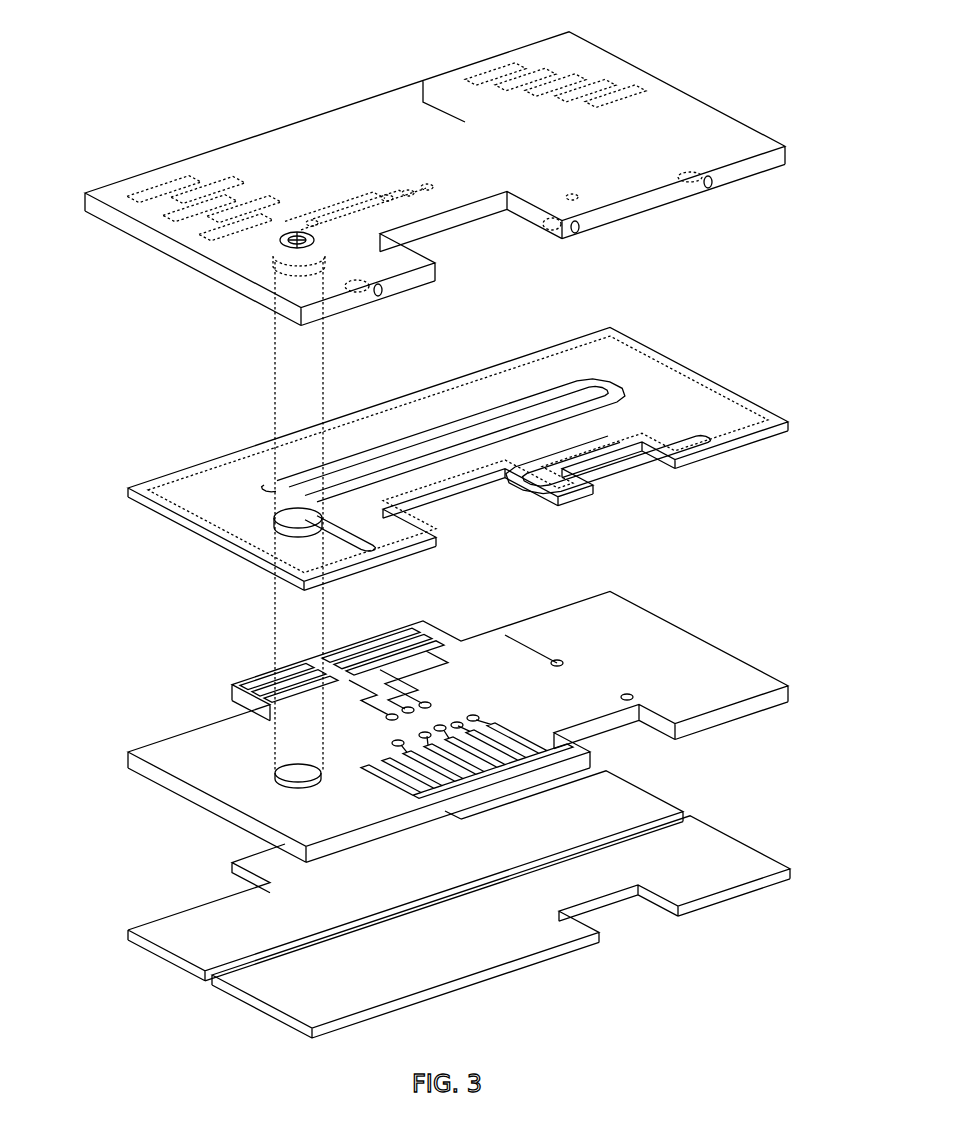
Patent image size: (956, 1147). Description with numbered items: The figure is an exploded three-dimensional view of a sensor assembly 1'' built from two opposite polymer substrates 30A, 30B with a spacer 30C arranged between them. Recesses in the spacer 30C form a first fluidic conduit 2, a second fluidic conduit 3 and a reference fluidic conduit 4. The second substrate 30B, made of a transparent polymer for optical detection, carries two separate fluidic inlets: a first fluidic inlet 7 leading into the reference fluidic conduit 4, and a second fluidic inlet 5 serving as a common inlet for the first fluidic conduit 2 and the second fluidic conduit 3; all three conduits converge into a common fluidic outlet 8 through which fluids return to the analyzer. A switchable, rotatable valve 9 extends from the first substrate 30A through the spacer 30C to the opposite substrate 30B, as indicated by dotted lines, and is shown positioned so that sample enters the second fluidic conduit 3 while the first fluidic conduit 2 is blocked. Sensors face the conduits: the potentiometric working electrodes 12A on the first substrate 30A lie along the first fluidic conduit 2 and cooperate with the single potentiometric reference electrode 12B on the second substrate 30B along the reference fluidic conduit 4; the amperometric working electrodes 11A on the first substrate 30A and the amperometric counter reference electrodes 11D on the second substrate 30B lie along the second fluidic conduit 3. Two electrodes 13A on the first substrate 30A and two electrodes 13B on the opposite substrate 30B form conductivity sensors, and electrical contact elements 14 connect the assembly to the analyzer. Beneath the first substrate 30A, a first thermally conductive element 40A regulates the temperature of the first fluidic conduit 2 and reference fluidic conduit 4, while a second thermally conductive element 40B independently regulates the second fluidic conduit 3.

The sensor assembly 1'' is at (70, 34).
The second substrate 30B is at (200, 147).
The electrical contact elements 14 is at (155, 198).
The switchable valve 9 is at (290, 232).
The conductivity electrodes on opposite substrate 13B is at (312, 220).
The amperometric counter reference electrodes 11D is at (425, 184).
The potentiometric reference electrode 12B is at (574, 195).
The common fluidic outlet 8 is at (712, 183).
The first fluidic inlet 7 is at (573, 233).
The second fluidic inlet 5 is at (376, 296).
The spacer 30C is at (255, 445).
The second fluidic conduit 3 is at (445, 390).
The first fluidic conduit 2 is at (473, 457).
The reference fluidic conduit 4 is at (603, 437).
The first substrate 30A is at (193, 730).
The amperometric working electrodes 11A is at (427, 702).
The potentiometric working electrodes 12A is at (475, 715).
The conductivity electrodes on first substrate 13A is at (626, 694).
The first thermally conductive element 40A is at (707, 822).
The second thermally conductive element 40B is at (188, 905).